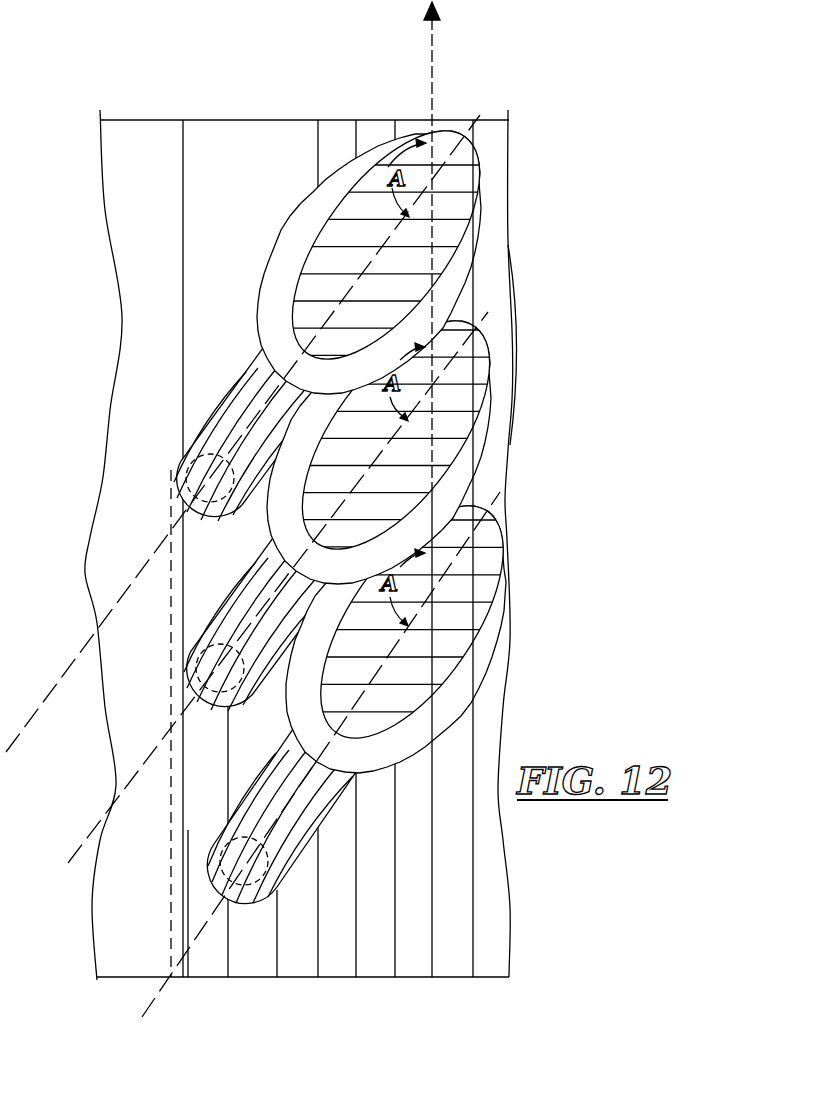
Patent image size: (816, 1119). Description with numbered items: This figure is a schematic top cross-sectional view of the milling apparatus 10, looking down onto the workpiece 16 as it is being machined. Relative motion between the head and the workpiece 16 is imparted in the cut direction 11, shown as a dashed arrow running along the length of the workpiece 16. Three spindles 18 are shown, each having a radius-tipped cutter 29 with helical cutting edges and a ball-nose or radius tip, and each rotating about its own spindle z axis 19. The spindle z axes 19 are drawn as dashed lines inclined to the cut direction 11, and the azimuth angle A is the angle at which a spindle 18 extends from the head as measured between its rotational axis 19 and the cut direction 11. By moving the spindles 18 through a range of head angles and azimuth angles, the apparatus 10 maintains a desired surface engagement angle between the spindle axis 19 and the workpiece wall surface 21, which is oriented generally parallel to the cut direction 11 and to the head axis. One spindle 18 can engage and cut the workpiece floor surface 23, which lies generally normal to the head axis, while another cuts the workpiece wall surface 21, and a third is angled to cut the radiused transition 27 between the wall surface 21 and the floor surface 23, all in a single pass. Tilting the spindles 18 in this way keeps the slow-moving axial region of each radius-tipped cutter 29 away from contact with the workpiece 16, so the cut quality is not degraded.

The milling apparatus 10 is at (608, 163).
The cut direction 11 is at (432, 58).
The workpiece 16 is at (335, 143).
The spindle 18 is at (460, 179).
The spindle z axis 19 is at (88, 835).
The workpiece wall surface 21 is at (183, 160).
The workpiece floor surface 23 is at (244, 153).
The radiused transition 27 is at (213, 952).
The radius-tipped cutter 29 is at (212, 437).